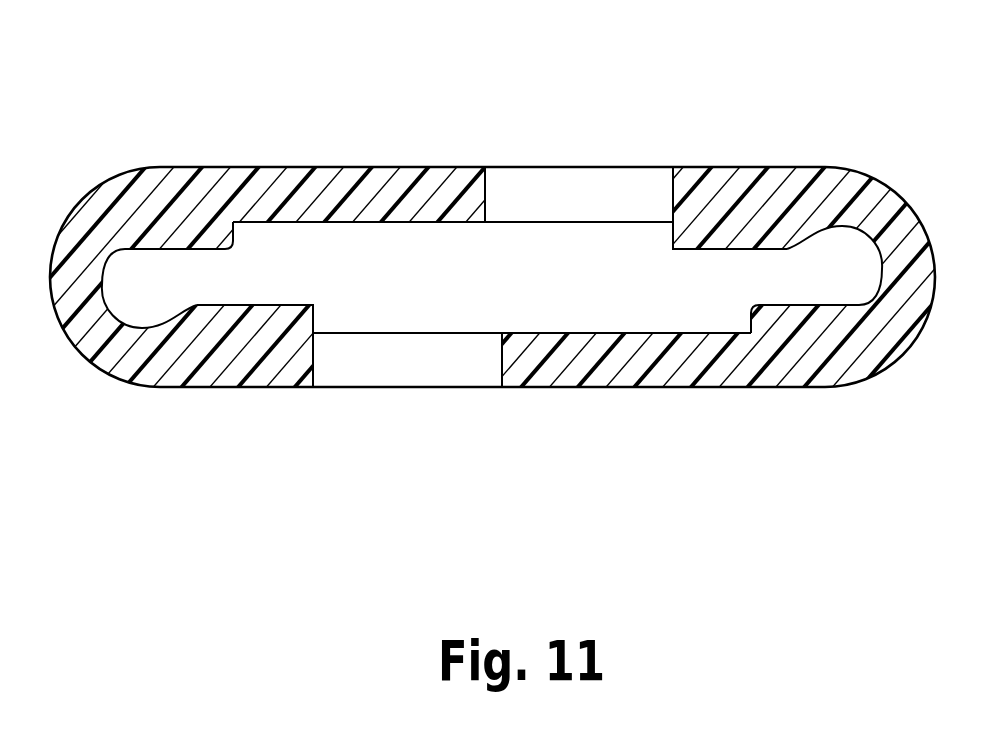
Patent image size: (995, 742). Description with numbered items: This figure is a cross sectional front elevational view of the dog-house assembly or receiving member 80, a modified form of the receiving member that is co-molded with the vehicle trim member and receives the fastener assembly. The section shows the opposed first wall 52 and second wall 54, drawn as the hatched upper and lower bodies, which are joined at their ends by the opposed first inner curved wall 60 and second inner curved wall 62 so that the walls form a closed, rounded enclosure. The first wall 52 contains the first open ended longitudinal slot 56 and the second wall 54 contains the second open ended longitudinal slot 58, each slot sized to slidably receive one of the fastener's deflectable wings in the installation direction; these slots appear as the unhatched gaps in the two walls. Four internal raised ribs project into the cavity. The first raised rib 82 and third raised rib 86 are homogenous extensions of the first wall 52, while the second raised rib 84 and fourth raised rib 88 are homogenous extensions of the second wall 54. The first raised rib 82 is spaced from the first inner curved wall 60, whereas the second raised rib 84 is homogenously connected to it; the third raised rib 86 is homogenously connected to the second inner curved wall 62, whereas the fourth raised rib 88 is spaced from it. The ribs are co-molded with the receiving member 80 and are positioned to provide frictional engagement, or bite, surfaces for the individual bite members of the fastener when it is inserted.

The dog-house assembly or receiving member 80 is at (736, 111).
The first wall 52 is at (385, 178).
The second wall 54 is at (573, 375).
The first open ended longitudinal slot 56 is at (550, 188).
The second open ended longitudinal slot 58 is at (428, 362).
The first inner curved wall 60 is at (875, 276).
The second inner curved wall 62 is at (114, 277).
The first raised rib 82 is at (720, 240).
The second raised rib 84 is at (797, 313).
The third raised rib 86 is at (183, 242).
The fourth raised rib 88 is at (285, 313).